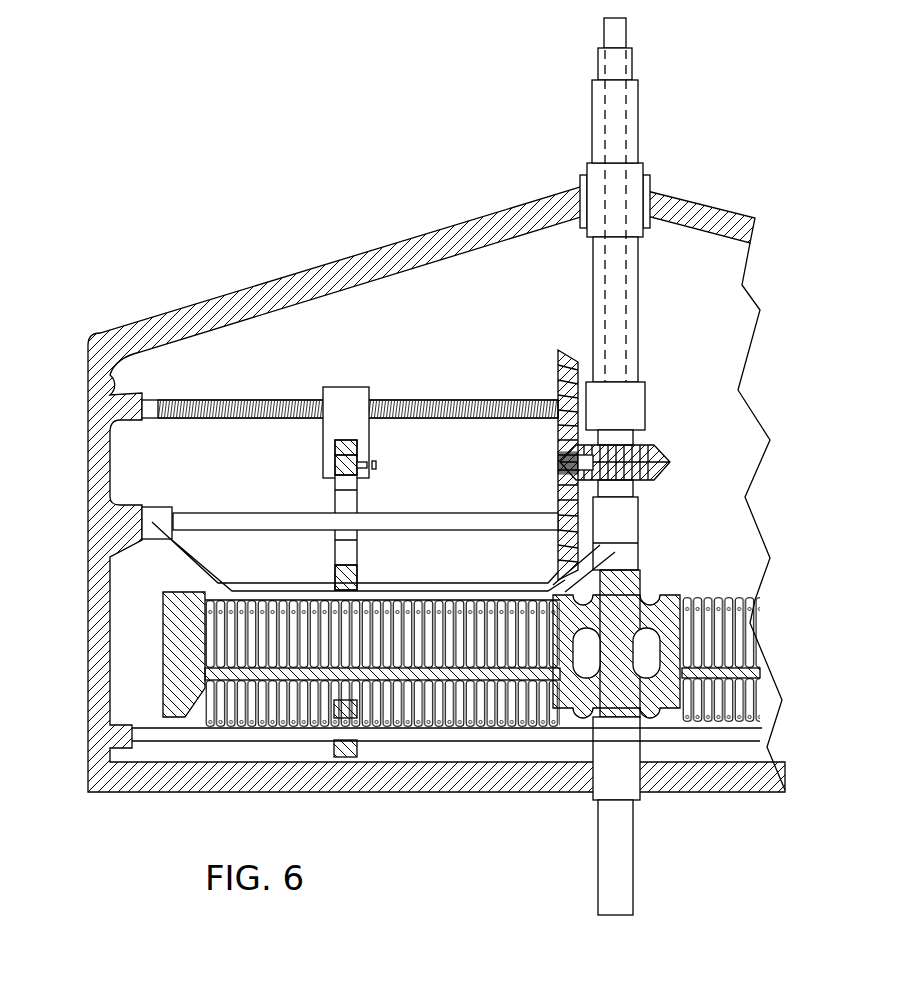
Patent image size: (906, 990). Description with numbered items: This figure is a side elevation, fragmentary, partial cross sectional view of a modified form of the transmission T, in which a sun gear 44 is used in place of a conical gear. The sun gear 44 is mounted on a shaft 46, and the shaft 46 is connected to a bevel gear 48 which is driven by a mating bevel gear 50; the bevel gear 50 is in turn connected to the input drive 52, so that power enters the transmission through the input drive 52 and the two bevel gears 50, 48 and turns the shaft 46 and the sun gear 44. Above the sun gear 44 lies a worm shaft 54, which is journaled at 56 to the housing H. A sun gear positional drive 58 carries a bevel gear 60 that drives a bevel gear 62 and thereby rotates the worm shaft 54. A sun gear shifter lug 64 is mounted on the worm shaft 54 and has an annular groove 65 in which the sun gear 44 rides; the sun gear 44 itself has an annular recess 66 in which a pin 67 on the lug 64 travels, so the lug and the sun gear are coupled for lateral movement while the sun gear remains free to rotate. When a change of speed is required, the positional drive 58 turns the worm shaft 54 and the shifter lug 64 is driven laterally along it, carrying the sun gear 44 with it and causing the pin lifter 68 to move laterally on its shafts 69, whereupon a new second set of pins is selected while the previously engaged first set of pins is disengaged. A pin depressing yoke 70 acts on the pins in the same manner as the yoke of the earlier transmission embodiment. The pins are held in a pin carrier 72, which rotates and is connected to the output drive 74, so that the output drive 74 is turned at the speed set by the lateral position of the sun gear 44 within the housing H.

The sun gear 44 is at (335, 493).
The shaft 46 is at (186, 507).
The bevel gear 48 is at (560, 487).
The bevel gear 50 is at (670, 467).
The input drive 52 is at (604, 32).
The worm shaft 54 is at (259, 400).
The journal 56 is at (102, 372).
The sun gear positional drive 58 is at (638, 120).
The bevel gear 60 is at (668, 456).
The bevel gear 62 is at (556, 348).
The sun gear shifter lug 64 is at (348, 387).
The annular groove 65 is at (335, 450).
The annular recess 66 is at (362, 462).
The pin 67 is at (376, 466).
The pin lifter 68 is at (348, 756).
The shafts 69 is at (480, 745).
The pin depressing yoke 70 is at (168, 548).
The pin carrier 72 is at (150, 628).
The output drive 74 is at (632, 62).
The housing H is at (358, 252).
The transmission T is at (456, 178).